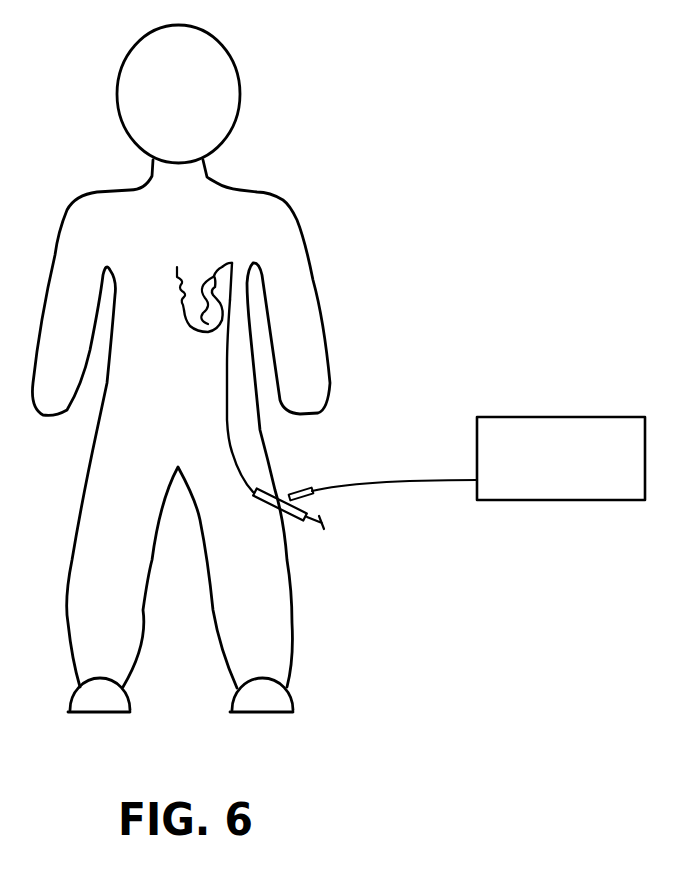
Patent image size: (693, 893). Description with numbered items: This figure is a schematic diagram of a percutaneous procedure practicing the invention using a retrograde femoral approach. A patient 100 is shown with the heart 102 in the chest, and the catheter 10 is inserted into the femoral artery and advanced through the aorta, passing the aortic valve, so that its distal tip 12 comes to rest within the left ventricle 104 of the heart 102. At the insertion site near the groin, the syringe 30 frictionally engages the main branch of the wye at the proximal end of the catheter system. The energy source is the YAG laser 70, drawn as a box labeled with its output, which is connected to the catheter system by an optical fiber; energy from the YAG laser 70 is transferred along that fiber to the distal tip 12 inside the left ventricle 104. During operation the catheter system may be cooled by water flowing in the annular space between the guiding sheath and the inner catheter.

The patient 100 is at (247, 210).
The heart 102 is at (178, 278).
The distal tip 12 is at (228, 295).
The left ventricle 104 is at (217, 303).
The catheter 10 is at (227, 418).
The syringe 30 is at (290, 510).
The YAG laser 70 is at (598, 415).